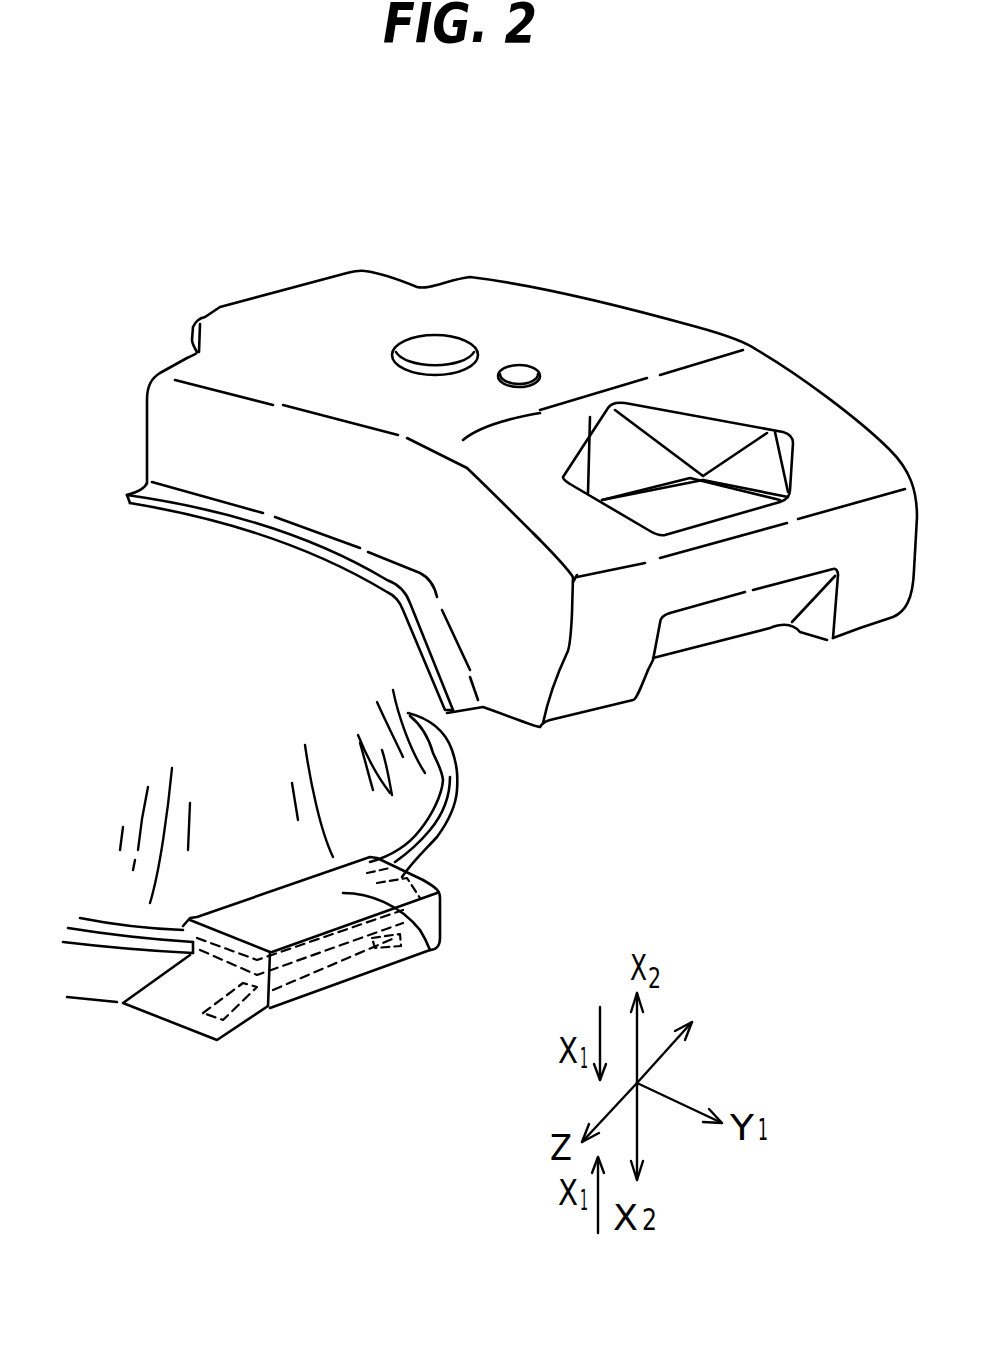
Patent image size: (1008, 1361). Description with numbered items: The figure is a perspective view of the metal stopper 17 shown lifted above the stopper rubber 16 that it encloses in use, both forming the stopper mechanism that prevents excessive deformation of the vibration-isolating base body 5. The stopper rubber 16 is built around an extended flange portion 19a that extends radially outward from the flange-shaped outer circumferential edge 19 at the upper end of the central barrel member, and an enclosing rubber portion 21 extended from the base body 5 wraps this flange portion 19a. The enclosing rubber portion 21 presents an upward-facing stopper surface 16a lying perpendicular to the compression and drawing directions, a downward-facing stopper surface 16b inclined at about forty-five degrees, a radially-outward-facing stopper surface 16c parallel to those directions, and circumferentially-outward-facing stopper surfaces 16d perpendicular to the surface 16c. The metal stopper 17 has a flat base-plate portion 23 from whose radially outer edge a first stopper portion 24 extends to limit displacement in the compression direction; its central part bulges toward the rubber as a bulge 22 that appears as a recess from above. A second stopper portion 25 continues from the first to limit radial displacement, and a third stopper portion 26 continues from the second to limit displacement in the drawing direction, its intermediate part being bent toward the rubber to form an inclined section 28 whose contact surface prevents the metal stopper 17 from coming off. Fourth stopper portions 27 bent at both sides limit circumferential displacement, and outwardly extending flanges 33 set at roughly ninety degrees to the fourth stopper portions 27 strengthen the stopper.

The vibration-isolating base body 5 is at (250, 802).
The stopper rubber 16 is at (447, 882).
The upward-facing stopper surface 16a is at (378, 940).
The downward-facing stopper surface 16b is at (277, 1013).
The radially-outward-facing stopper surface 16c is at (380, 940).
The circumferentially-outward-facing stopper surfaces 16d is at (185, 997).
The metal stopper 17 is at (435, 257).
The flange-shaped outer circumferential edge 19 is at (107, 930).
The extended flange portion 19a is at (297, 920).
The enclosing rubber portion 21 is at (432, 923).
The bulge 22 is at (683, 500).
The flat base-plate portion 23 is at (537, 315).
The first stopper portion 24 is at (693, 373).
The second stopper portion 25 is at (823, 533).
The third stopper portion 26 is at (815, 620).
The fourth stopper portions 27 is at (470, 568).
The inclined section 28 is at (702, 628).
The outwardly extending flanges 33 is at (203, 503).